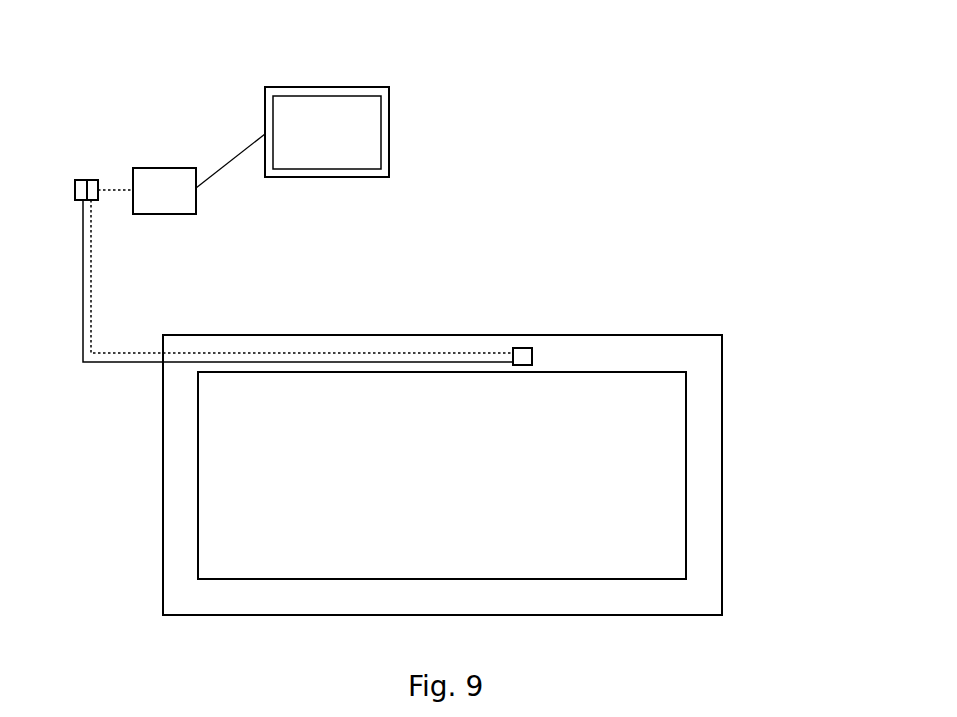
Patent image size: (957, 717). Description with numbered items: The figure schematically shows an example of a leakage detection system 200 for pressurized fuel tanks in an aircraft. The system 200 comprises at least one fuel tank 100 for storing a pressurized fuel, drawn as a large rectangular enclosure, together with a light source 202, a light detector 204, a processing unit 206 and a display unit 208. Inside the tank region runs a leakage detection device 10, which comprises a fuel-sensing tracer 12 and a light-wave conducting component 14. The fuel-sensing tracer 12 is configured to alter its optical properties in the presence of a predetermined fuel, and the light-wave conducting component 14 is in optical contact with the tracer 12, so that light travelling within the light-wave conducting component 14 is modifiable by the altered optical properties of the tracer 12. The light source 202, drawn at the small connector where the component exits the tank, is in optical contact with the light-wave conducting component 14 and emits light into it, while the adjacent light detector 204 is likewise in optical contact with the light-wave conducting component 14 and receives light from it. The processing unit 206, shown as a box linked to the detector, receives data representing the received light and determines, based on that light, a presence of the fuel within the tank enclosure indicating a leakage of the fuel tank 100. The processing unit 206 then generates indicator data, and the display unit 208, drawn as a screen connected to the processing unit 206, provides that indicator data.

The leakage detection device 10 is at (323, 340).
The fuel-sensing tracer 12 is at (142, 358).
The light-wave conducting component 14 is at (525, 348).
The fuel tank 100 is at (677, 335).
The leakage detection system 200 is at (705, 106).
The light source 202 is at (79, 178).
The light detector 204 is at (93, 178).
The processing unit 206 is at (163, 168).
The display unit 208 is at (389, 116).